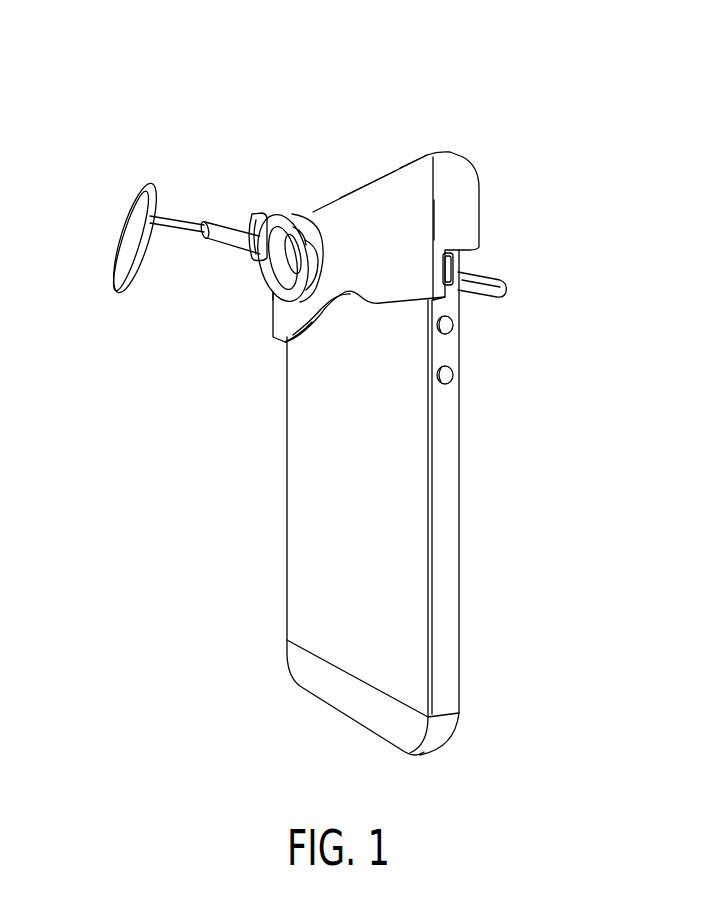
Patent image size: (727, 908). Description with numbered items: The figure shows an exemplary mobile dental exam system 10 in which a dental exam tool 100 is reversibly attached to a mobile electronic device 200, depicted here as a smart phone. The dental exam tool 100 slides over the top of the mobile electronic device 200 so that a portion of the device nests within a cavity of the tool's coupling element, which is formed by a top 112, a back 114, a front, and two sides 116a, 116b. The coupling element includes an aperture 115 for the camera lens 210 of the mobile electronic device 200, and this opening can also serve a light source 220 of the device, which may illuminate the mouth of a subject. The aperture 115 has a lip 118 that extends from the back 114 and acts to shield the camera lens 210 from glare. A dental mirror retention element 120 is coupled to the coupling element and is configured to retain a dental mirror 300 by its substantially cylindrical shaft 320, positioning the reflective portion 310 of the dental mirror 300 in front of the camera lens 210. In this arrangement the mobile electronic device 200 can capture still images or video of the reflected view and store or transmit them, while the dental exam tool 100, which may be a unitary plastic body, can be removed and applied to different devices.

The mobile dental exam system 10 is at (276, 104).
The dental exam tool 100 is at (418, 245).
The top 112 is at (368, 182).
The back 114 is at (390, 195).
The side 116a is at (446, 200).
The side 116b is at (273, 265).
The lip 118 is at (283, 292).
The aperture 115 is at (280, 250).
The dental mirror retention element 120 is at (253, 223).
The mobile electronic device 200 is at (303, 542).
The camera lens 210 is at (293, 217).
The light source 220 is at (317, 252).
The dental mirror 300 is at (138, 200).
The reflective portion 310 is at (132, 250).
The cylindrical shaft 320 is at (218, 230).